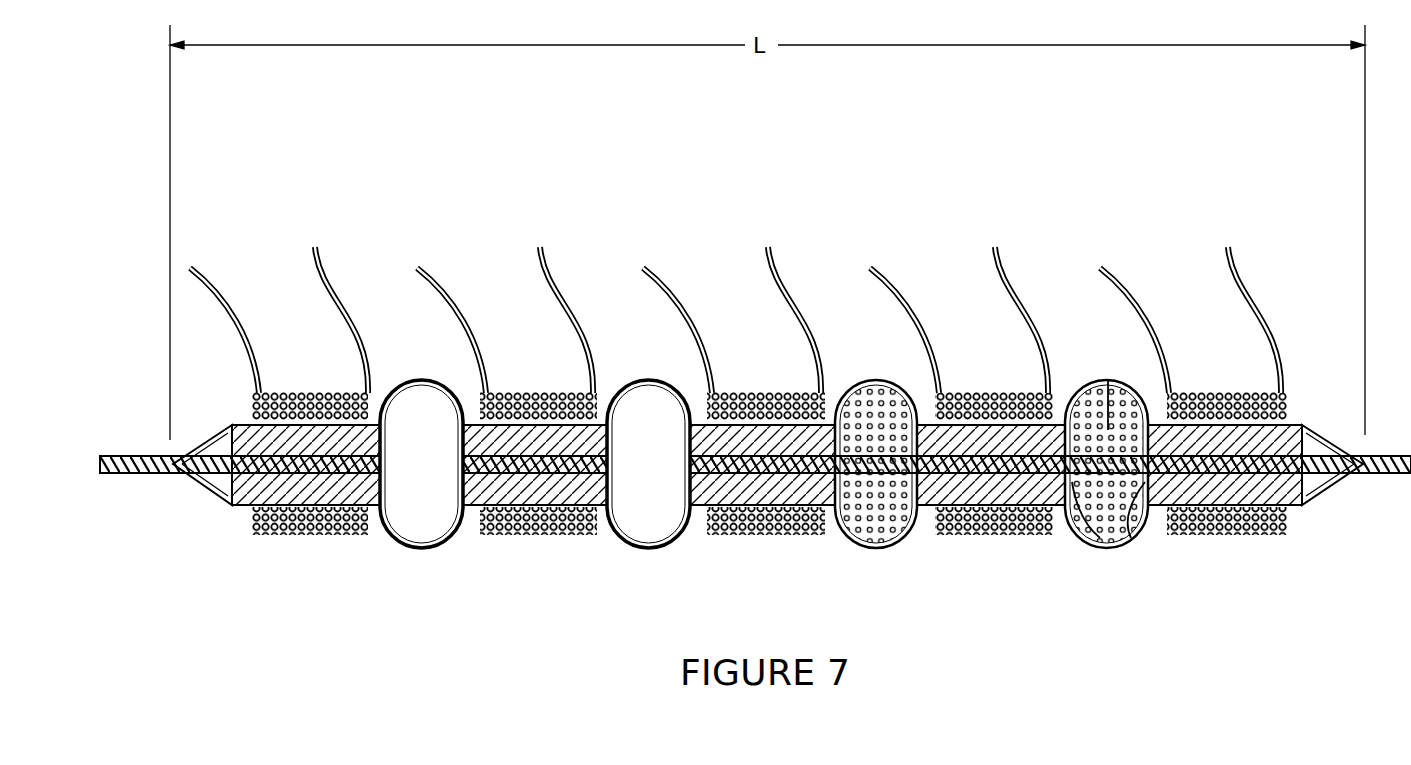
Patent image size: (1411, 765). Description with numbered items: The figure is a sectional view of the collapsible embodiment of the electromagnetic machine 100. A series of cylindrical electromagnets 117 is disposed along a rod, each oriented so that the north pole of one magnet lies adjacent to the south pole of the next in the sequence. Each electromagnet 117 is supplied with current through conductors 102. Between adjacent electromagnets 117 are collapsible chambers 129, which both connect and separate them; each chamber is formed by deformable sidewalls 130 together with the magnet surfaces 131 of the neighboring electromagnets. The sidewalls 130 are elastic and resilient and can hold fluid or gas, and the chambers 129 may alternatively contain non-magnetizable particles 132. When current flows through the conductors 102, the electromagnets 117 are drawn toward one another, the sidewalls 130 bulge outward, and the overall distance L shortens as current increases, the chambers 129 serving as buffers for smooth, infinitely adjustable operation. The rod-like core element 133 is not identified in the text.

The electromagnetic machine 100 is at (485, 208).
The conductors 102 is at (308, 267).
The electromagnets 117 is at (310, 535).
The collapsible chambers 129 is at (645, 378).
The deformable sidewalls 130 is at (1123, 377).
The magnet surfaces 131 is at (1100, 543).
The non-magnetizable particles 132 is at (1108, 380).
The core wire 133 is at (113, 475).